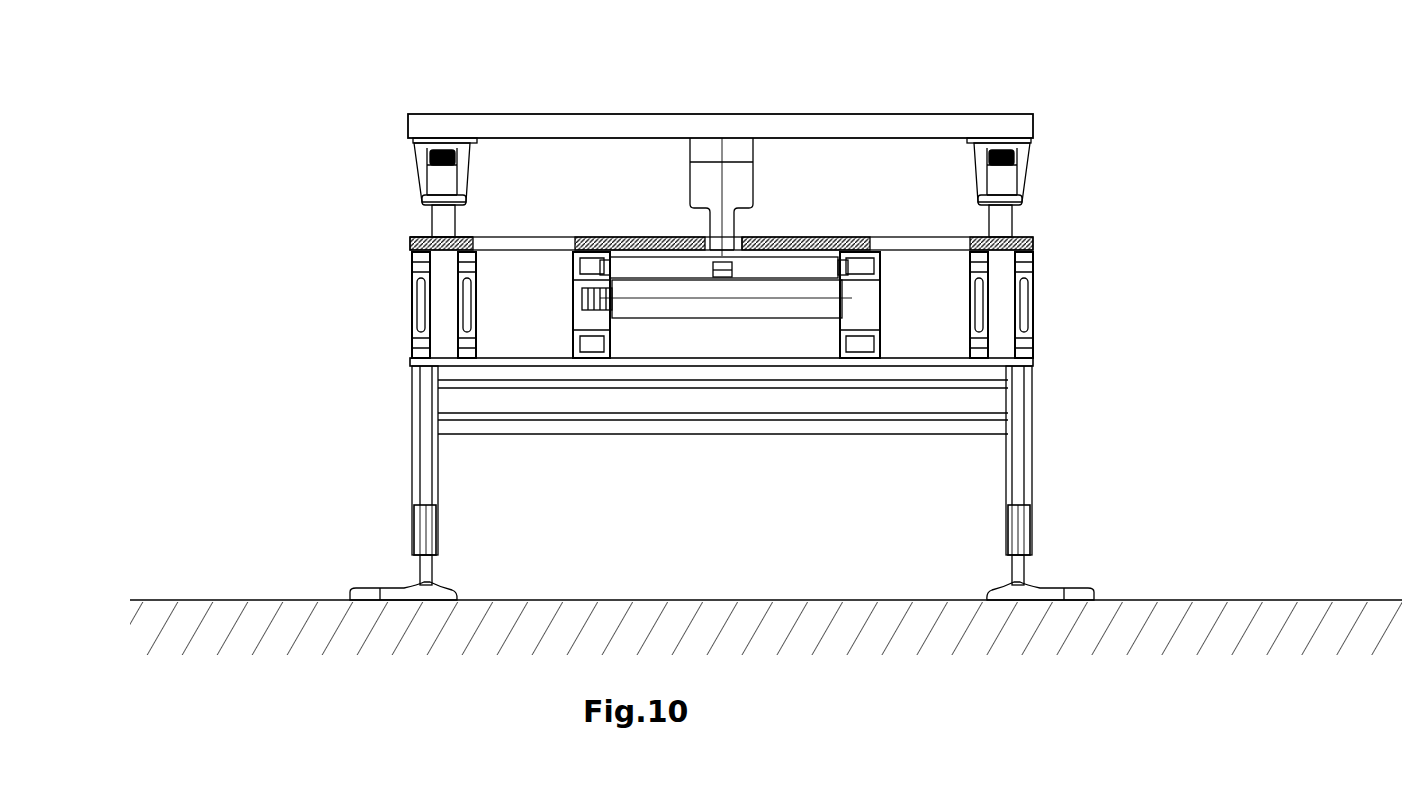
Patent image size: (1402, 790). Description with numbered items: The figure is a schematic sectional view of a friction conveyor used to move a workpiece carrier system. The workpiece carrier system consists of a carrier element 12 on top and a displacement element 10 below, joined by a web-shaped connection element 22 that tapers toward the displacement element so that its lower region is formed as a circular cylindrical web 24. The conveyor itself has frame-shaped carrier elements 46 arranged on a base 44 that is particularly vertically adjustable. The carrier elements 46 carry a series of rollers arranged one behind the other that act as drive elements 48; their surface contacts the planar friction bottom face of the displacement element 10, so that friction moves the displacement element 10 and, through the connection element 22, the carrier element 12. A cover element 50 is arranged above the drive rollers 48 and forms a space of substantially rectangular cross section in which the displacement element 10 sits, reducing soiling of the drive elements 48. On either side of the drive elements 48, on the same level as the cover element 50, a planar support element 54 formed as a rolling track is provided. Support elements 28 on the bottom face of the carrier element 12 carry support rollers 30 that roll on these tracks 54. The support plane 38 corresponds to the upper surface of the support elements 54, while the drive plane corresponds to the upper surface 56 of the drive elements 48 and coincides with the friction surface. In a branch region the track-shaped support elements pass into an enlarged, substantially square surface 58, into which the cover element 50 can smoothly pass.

The displacement element 10 is at (788, 265).
The carrier element 12 is at (915, 128).
The connection element 22 is at (685, 180).
The circular cylindrical web 24 is at (715, 232).
The support element 28 is at (393, 176).
The support roller 30 is at (445, 220).
The support plane 38 is at (416, 237).
The base 44 is at (1062, 445).
The frame-shaped carrier element 46 is at (540, 322).
The drive element 48 is at (748, 306).
The cover element 50 is at (600, 240).
The support element 54 is at (410, 243).
The upper surface of the drive elements 56 is at (655, 282).
The square surface 58 is at (738, 242).